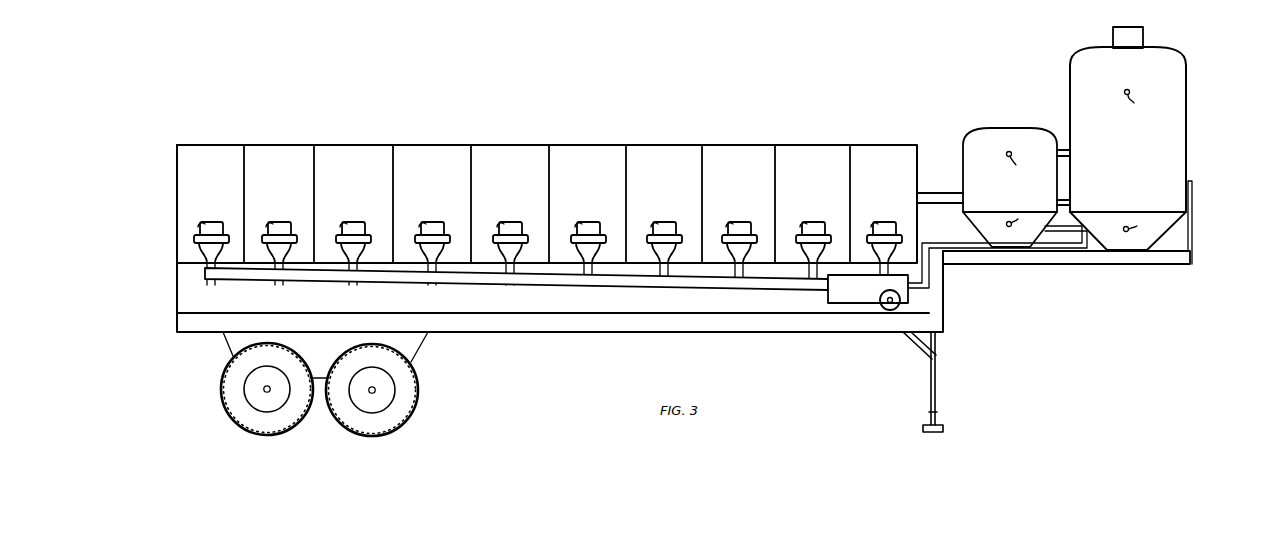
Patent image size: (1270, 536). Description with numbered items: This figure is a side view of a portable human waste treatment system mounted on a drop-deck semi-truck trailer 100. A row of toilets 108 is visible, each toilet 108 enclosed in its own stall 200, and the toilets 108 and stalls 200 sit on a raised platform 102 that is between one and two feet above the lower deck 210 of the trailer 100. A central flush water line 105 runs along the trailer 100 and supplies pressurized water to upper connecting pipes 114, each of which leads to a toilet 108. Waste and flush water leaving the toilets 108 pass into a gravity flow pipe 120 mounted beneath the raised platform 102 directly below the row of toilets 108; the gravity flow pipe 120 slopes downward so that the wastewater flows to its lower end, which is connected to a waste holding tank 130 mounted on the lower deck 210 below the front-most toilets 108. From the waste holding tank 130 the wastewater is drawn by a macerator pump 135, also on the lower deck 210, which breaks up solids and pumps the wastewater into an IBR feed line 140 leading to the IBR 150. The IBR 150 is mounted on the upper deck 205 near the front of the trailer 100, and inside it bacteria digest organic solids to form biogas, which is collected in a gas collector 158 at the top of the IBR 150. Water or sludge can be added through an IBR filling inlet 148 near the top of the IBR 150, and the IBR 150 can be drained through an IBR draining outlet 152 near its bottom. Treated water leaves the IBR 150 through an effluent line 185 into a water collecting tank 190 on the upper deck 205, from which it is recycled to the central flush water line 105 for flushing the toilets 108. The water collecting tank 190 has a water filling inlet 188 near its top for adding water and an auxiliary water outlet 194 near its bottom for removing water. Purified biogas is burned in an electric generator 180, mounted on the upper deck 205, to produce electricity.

The drop-deck semi-truck trailer 100 is at (177, 322).
The raised platform 102 is at (177, 260).
The stall 200 is at (212, 157).
The toilet 108 is at (204, 222).
The upper connecting pipe 114 is at (515, 270).
The gravity flow pipe 120 is at (455, 283).
The waste holding tank 130 is at (828, 297).
The macerator pump 135 is at (879, 297).
The IBR feed line 140 is at (947, 243).
The central flush water line 105 is at (941, 193).
The water collecting tank 190 is at (1000, 128).
The water filling inlet 188 is at (1025, 163).
The auxiliary water outlet 194 is at (1025, 220).
The effluent line 185 is at (1063, 150).
The electric generator 180 is at (1064, 202).
The IBR 150 is at (1188, 112).
The IBR filling inlet 148 is at (1143, 102).
The IBR draining outlet 152 is at (1144, 227).
The gas collector 158 is at (1143, 28).
The upper deck 205 is at (1072, 266).
The lower deck 210 is at (832, 334).